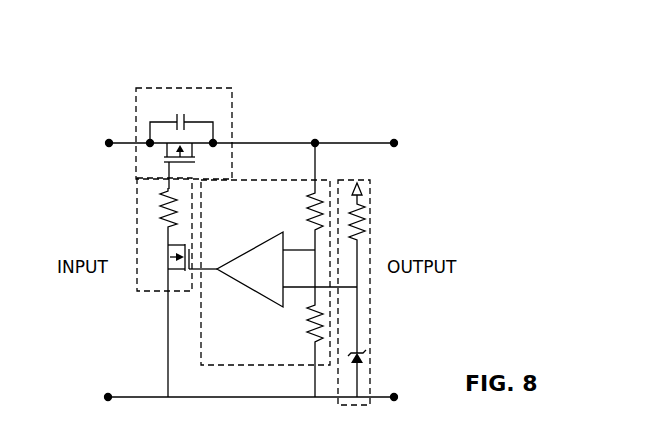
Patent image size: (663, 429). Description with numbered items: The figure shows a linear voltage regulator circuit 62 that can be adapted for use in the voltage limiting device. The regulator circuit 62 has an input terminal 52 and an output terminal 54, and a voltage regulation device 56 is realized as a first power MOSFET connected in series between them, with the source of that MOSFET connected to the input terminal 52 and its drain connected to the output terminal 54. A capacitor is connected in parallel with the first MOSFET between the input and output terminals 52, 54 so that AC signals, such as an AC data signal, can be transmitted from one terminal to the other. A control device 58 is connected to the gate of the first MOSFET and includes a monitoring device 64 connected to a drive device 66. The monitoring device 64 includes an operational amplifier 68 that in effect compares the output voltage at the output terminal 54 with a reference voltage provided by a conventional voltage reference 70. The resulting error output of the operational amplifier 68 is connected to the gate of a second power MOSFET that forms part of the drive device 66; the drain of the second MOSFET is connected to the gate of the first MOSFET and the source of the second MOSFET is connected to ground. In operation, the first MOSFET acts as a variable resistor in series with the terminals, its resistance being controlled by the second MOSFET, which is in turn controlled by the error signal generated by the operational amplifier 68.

The input terminal 52 is at (109, 140).
The output terminal 54 is at (394, 141).
The voltage regulation device 56 is at (136, 163).
The control device 58 is at (137, 280).
The linear voltage regulator circuit 62 is at (341, 73).
The monitoring device 64 is at (201, 343).
The drive device 66 is at (137, 200).
The operational amplifier 68 is at (268, 297).
The voltage reference 70 is at (370, 224).